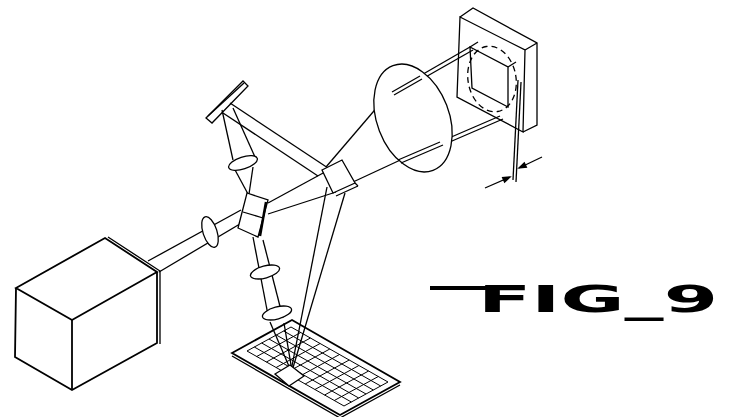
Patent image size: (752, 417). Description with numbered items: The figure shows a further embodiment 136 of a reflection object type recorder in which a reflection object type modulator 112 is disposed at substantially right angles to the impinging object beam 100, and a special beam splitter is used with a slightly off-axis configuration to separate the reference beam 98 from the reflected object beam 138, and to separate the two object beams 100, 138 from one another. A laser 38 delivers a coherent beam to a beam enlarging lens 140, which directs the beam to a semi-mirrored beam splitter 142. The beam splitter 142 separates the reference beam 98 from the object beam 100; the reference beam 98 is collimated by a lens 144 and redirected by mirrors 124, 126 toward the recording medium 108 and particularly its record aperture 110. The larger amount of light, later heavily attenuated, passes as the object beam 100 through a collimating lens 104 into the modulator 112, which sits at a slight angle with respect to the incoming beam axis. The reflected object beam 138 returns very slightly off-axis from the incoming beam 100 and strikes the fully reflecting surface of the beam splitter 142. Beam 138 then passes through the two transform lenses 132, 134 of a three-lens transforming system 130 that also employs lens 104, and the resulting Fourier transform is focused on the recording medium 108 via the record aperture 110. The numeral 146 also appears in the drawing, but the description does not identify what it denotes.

The laser 38 is at (78, 258).
The reference beam 98 is at (229, 142).
The object beam 100 is at (350, 115).
The collimating lens 104 is at (405, 72).
The recording medium 108 is at (342, 347).
The record aperture 110 is at (290, 380).
The reflection object type modulator 112 is at (530, 43).
The mirror 124 is at (222, 95).
The mirror 126 is at (352, 184).
The three-lens transforming system 130 is at (292, 284).
The transform lens 132 is at (257, 275).
The transform lens 134 is at (265, 313).
The reflection object type recorder embodiment 136 is at (330, 75).
The reflected object beam 138 is at (254, 263).
The beam enlarging lens 140 is at (203, 226).
The semi-mirrored beam splitter 142 is at (247, 203).
The lens 144 is at (230, 164).
The reference position 146 is at (697, 416).